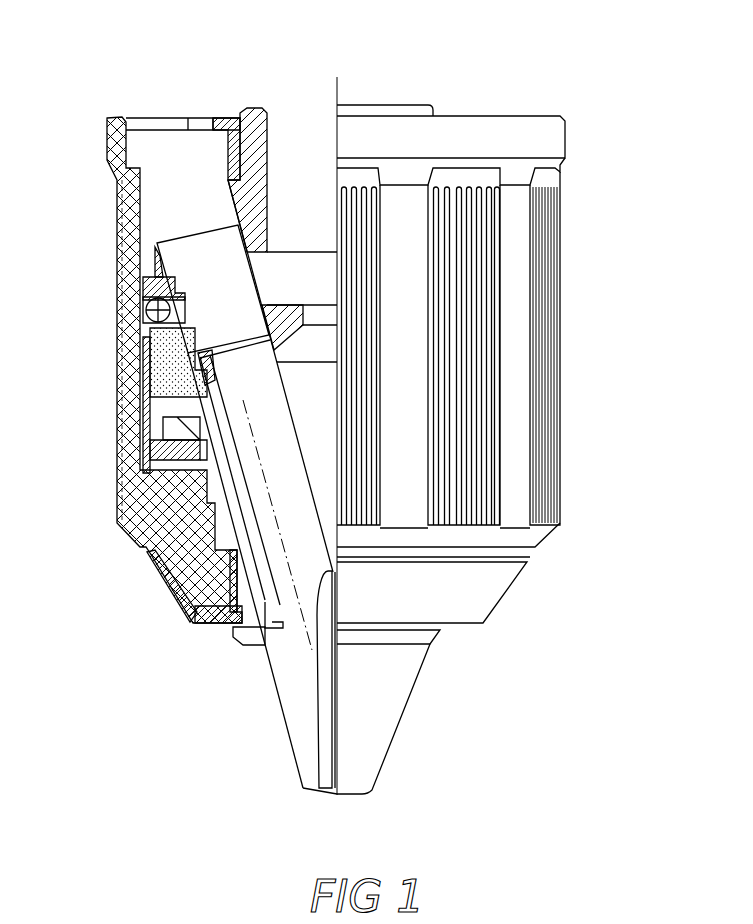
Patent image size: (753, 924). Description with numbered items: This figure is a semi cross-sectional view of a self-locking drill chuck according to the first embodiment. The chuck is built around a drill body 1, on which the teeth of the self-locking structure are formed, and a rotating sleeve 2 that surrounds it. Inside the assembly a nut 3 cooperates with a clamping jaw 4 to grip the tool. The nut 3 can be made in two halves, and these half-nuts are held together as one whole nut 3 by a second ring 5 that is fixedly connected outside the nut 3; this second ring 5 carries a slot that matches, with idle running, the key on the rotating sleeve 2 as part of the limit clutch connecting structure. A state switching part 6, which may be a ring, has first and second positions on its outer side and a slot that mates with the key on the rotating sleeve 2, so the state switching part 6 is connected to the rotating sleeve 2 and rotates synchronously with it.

The drill body 1 is at (238, 120).
The rotating sleeve 2 is at (515, 137).
The nut 3 is at (172, 362).
The clamping jaw 4 is at (368, 710).
The second ring 5 is at (143, 398).
The state switching part 6 is at (160, 457).